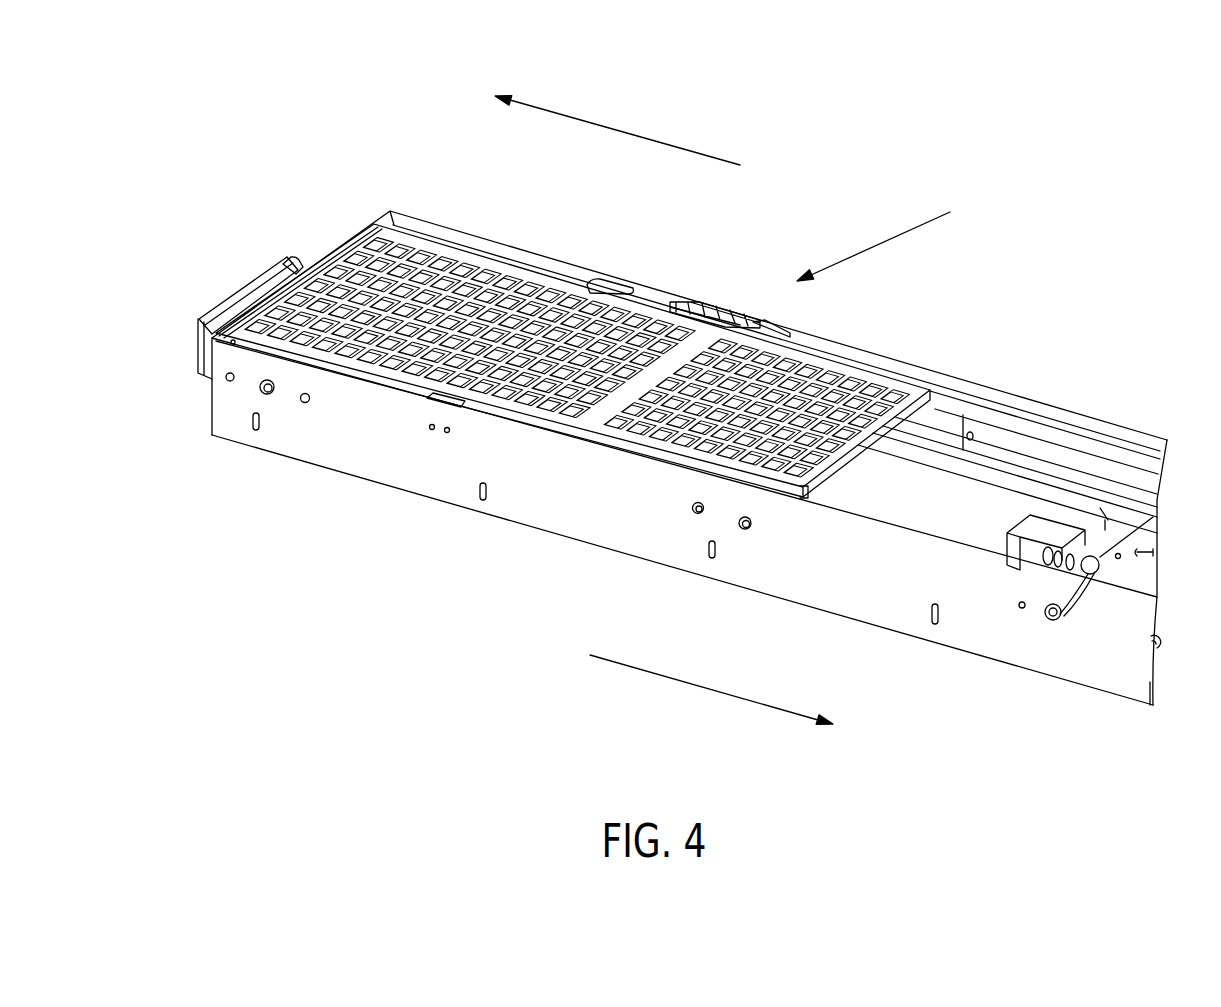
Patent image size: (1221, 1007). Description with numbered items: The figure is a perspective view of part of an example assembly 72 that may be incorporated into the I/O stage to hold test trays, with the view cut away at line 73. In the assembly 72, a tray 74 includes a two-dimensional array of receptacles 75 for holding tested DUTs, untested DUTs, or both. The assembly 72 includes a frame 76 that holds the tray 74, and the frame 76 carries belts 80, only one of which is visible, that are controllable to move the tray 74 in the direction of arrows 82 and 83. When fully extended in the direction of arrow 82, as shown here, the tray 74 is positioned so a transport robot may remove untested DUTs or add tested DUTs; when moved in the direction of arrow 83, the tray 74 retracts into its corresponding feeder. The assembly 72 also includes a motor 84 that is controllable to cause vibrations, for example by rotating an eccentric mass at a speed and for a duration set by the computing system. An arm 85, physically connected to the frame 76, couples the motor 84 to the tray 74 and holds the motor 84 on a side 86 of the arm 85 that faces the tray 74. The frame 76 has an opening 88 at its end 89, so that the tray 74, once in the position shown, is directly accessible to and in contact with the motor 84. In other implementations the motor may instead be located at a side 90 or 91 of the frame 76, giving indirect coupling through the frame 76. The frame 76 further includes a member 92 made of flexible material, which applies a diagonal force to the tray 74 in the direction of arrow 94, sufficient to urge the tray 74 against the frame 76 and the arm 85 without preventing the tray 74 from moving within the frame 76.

The assembly 72 is at (462, 112).
The line 73 is at (1166, 490).
The tray 74 is at (350, 238).
The receptacles 75 is at (508, 275).
The frame 76 is at (581, 525).
The belts 80 is at (1008, 440).
The arrow 82 is at (622, 131).
The arrow 83 is at (685, 683).
The motor 84 is at (290, 265).
The arm 85 is at (222, 300).
The side 86 is at (205, 330).
The opening 88 is at (360, 217).
The end 89 is at (392, 212).
The side 90 is at (405, 494).
The side 91 is at (862, 352).
The member 92 is at (707, 337).
The arrow 94 is at (877, 245).